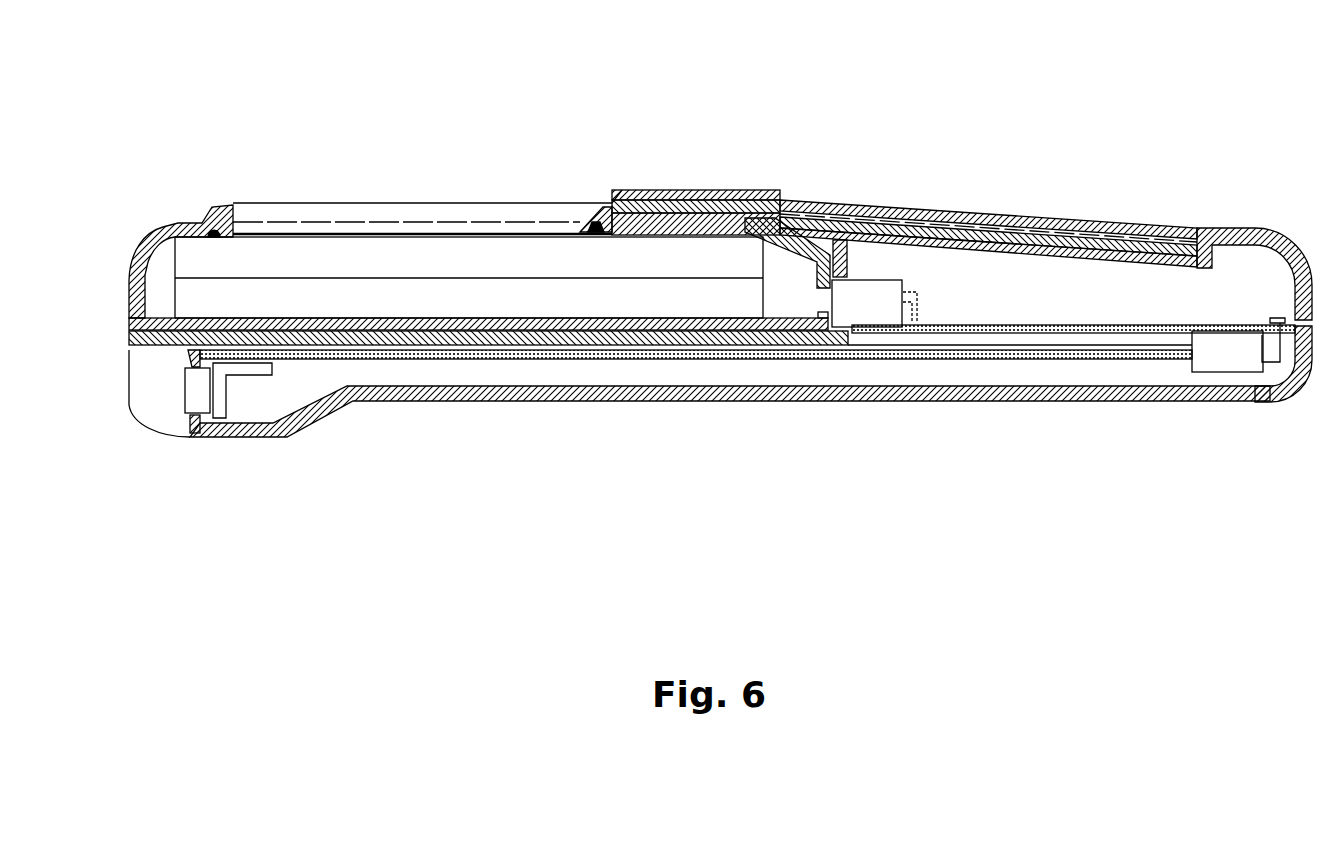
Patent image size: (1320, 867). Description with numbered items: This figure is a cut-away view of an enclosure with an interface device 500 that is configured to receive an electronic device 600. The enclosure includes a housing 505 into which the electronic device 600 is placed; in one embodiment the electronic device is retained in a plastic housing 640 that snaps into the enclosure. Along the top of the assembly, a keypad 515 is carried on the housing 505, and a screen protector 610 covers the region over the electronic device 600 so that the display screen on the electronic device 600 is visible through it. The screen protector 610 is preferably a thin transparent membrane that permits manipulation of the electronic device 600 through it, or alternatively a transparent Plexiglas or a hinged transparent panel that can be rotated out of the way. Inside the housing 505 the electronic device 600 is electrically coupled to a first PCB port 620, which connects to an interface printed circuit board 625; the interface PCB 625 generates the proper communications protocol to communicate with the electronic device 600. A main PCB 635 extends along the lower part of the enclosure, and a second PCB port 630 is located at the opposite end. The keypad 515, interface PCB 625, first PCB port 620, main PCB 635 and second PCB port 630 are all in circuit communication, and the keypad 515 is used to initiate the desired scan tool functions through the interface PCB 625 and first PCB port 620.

The enclosure with an interface device 500 is at (647, 108).
The housing 505 is at (610, 403).
The keypad 515 is at (910, 200).
The electronic device 600 is at (177, 260).
The screen protector 610 is at (313, 234).
The first PCB port 620 is at (880, 280).
The interface printed circuit board 625 is at (1093, 323).
The second PCB port 630 is at (185, 383).
The main PCB 635 is at (1033, 356).
The plastic housing 640 is at (791, 238).